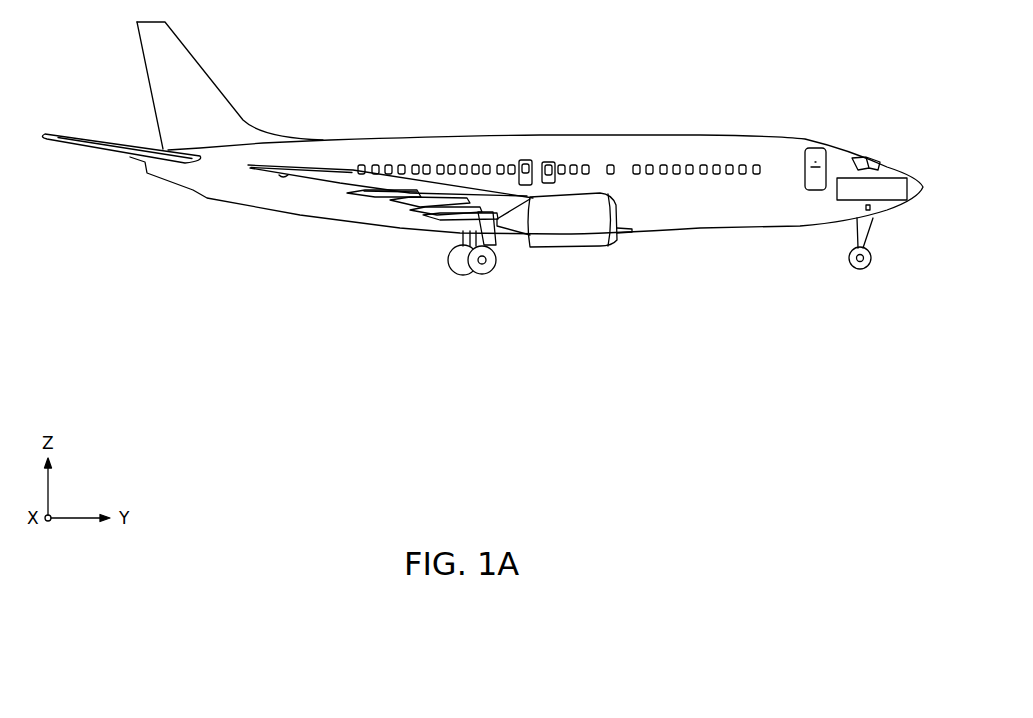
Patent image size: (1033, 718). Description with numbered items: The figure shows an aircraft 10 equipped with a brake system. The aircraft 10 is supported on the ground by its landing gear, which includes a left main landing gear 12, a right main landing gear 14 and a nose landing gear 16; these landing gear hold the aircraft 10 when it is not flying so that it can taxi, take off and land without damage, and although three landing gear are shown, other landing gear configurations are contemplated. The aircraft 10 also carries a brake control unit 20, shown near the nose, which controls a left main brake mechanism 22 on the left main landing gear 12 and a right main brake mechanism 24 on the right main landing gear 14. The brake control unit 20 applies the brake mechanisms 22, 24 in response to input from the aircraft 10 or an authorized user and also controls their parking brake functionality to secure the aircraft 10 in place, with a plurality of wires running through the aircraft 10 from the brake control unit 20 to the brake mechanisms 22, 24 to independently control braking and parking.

The aircraft 10 is at (613, 62).
The left main landing gear 12 is at (453, 242).
The right main landing gear 14 is at (502, 268).
The nose landing gear 16 is at (882, 248).
The brake control unit 20 is at (905, 180).
The left main brake mechanism 22 is at (448, 265).
The right main brake mechanism 24 is at (478, 264).